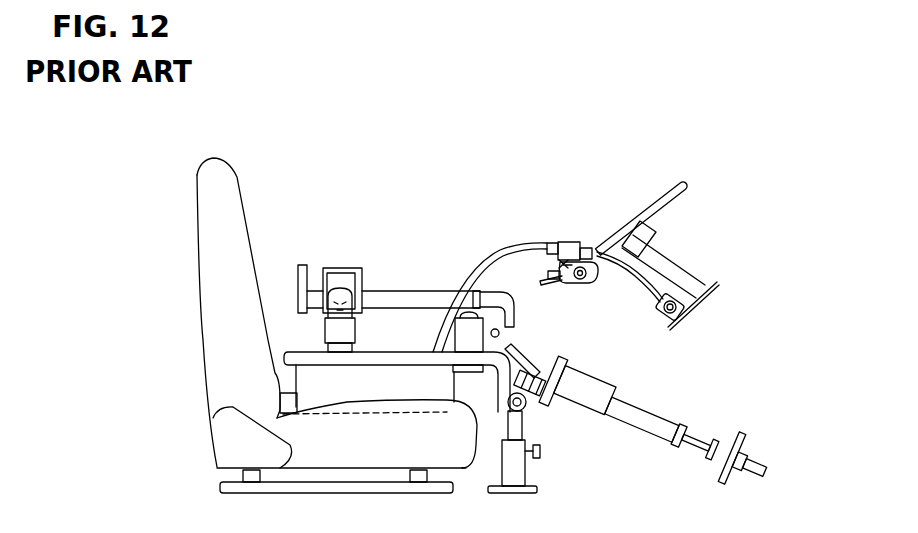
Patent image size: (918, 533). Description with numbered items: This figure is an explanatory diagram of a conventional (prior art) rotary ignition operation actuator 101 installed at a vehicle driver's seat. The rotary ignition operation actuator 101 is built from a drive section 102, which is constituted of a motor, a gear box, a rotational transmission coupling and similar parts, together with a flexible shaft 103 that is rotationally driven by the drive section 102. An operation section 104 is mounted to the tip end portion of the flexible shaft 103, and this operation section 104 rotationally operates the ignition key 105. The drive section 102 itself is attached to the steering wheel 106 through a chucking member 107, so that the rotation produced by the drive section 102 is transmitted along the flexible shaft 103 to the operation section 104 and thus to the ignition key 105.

The rotary ignition operation actuator 101 is at (623, 93).
The drive section 102 is at (571, 240).
The flexible shaft 103 is at (669, 210).
The operation section 104 is at (673, 297).
The ignition key 105 is at (710, 273).
The steering wheel 106 is at (668, 215).
The chucking member 107 is at (578, 280).